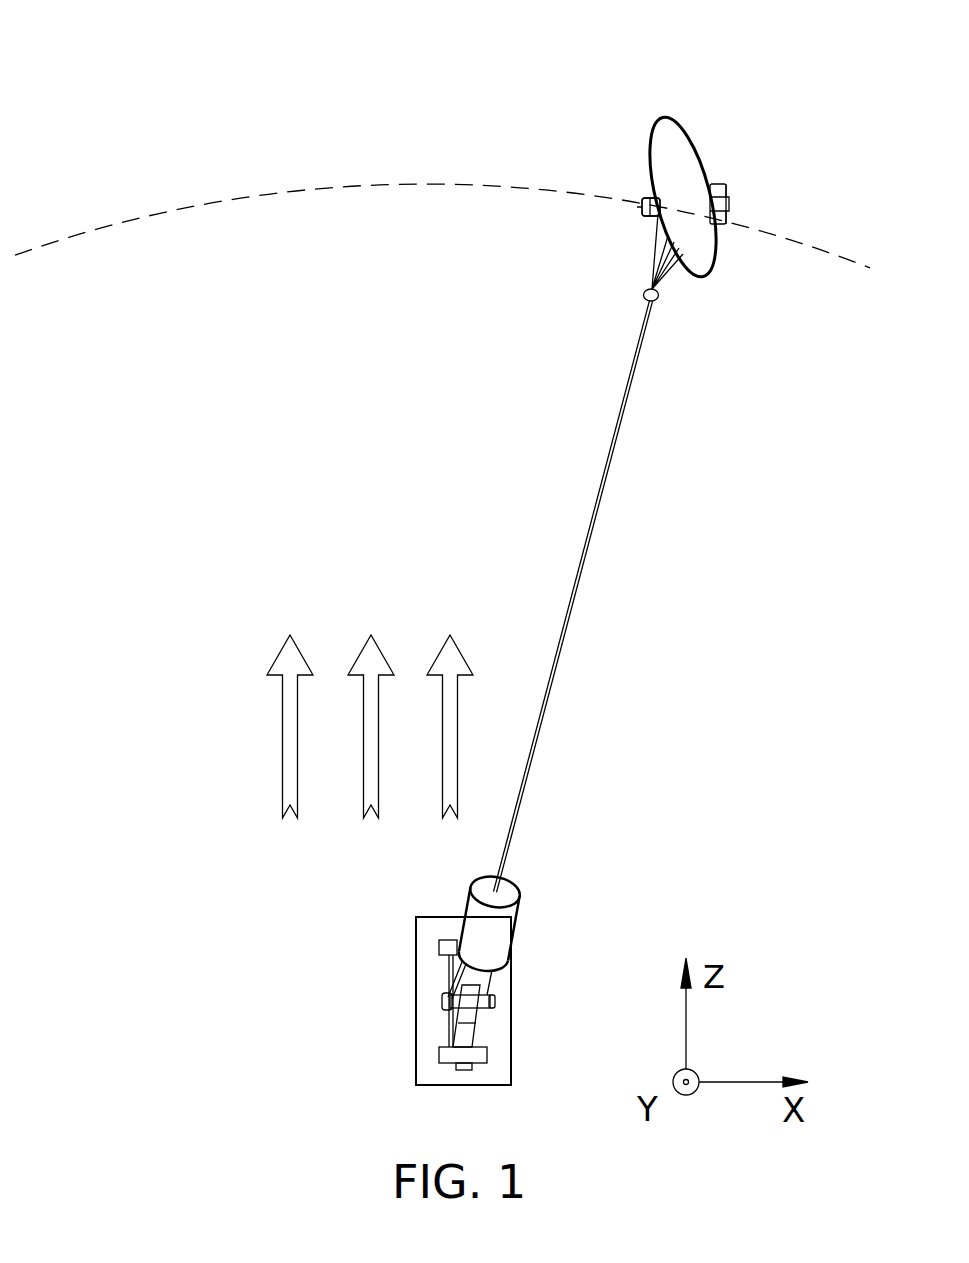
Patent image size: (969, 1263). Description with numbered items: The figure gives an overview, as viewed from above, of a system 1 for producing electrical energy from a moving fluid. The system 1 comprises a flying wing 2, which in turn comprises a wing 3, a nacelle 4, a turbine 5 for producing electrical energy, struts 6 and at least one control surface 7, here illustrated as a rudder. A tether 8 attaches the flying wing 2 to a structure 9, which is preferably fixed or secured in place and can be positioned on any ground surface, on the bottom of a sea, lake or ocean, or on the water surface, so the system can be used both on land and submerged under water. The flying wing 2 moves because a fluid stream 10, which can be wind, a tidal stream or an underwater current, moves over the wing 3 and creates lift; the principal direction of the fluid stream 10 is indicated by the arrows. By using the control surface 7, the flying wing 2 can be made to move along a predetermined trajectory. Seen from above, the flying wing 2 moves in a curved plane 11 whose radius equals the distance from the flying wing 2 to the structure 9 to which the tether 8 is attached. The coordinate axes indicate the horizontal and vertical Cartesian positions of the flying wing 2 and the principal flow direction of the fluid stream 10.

The system 1 is at (125, 63).
The flying wing 2 is at (620, 155).
The wing 3 is at (677, 148).
The nacelle 4 is at (647, 225).
The turbine 5 is at (598, 242).
The struts 6 is at (683, 288).
The control surface 7 is at (726, 193).
The tether 8 is at (574, 606).
The structure 9 is at (408, 1003).
The fluid stream 10 is at (275, 752).
The curved plane 11 is at (133, 221).